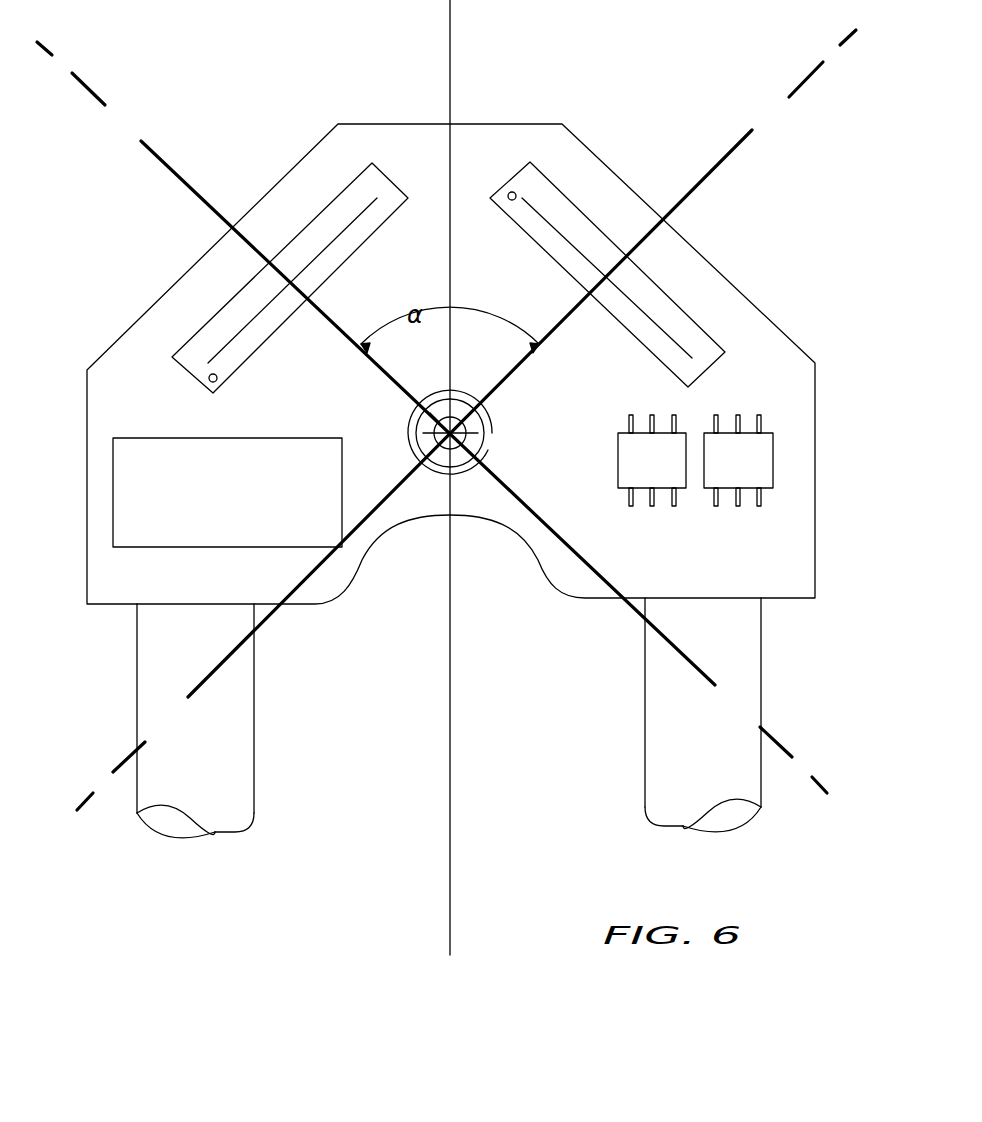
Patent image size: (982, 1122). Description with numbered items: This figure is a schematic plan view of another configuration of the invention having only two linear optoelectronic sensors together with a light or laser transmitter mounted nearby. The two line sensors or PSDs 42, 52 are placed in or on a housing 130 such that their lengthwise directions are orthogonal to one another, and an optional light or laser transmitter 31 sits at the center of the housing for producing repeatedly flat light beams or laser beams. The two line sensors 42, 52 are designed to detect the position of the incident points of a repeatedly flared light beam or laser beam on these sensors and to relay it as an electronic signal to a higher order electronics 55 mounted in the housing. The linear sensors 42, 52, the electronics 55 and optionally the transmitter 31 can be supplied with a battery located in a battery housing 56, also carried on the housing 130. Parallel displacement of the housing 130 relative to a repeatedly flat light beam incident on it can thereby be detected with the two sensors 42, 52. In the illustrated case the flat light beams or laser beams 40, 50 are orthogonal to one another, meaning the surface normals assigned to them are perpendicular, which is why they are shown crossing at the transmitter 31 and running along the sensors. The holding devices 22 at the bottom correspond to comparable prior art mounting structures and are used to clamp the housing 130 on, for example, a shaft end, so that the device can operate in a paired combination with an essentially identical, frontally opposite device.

The housing 130 is at (403, 124).
The flat light beam or laser beam 50 is at (160, 153).
The flat light beam or laser beam 40 is at (742, 143).
The line sensor or PSD 52 is at (342, 192).
The line sensor or PSD 42 is at (560, 193).
The light or laser transmitter 31 is at (478, 428).
The battery housing 56 is at (240, 505).
The higher order electronics 55 is at (667, 475).
The holding devices 22 is at (245, 702).